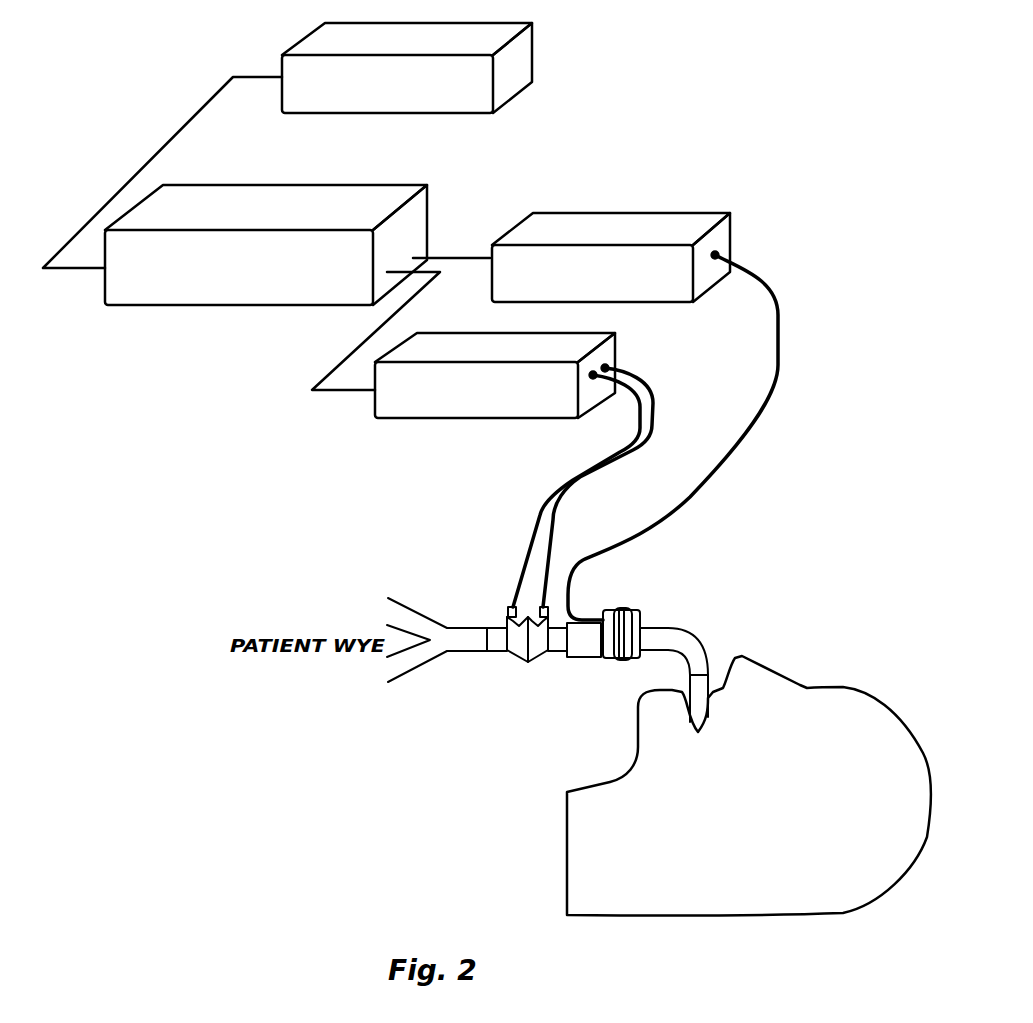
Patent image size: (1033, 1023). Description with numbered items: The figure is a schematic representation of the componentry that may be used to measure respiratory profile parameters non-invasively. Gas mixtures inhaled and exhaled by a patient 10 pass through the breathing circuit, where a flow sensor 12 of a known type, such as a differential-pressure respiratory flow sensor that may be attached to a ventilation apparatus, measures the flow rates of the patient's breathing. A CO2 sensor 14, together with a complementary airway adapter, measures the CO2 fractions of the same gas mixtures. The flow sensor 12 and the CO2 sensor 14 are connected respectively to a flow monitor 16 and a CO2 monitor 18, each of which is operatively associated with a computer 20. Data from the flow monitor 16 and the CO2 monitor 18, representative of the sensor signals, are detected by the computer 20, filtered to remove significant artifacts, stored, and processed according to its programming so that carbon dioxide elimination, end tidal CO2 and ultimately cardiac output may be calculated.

The patient 10 is at (583, 868).
The flow sensor 12 is at (518, 653).
The CO2 sensor 14 is at (632, 628).
The flow monitor 16 is at (417, 407).
The CO2 monitor 18 is at (628, 227).
The computer 20 is at (122, 78).